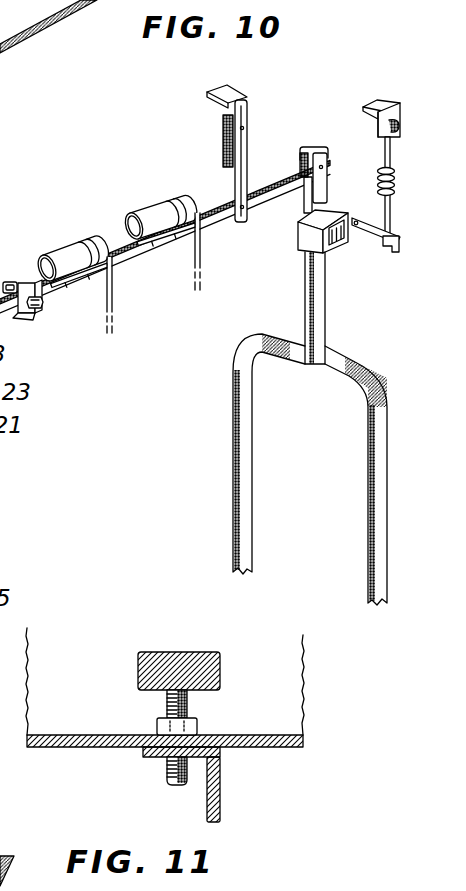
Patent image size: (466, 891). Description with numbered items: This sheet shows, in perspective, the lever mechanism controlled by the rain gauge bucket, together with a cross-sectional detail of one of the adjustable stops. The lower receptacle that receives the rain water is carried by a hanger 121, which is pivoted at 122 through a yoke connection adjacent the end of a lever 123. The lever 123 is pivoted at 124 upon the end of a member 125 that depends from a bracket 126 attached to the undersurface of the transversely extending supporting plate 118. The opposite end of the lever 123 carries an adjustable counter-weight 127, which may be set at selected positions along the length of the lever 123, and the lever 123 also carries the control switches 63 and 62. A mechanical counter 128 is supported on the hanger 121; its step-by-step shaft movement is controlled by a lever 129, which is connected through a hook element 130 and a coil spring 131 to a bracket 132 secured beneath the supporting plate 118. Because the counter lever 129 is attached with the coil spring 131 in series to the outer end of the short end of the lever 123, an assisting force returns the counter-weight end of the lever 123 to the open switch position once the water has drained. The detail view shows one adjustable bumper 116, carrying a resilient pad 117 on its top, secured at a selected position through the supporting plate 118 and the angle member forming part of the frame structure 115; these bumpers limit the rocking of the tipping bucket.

In FIG. 10, the control switch 62 is at (156, 213).
In FIG. 10, the control switch 63 is at (70, 252).
In FIG. 11, the frame structure 115 is at (221, 792).
In FIG. 11, the adjustable bumper 116 is at (189, 707).
In FIG. 11, the resilient pad 117 is at (163, 653).
In FIG. 11, the transversely extending supporting plate 118 is at (268, 748).
In FIG. 10, the hanger 121 is at (321, 306).
In FIG. 10, the pivot 122 is at (329, 148).
In FIG. 10, the lever 123 is at (273, 185).
In FIG. 10, the pivot 124 is at (241, 222).
In FIG. 10, the member 125 is at (232, 157).
In FIG. 10, the bracket 126 is at (234, 160).
In FIG. 10, the adjustable counter-weight 127 is at (36, 322).
In FIG. 10, the mechanical counter 128 is at (312, 236).
In FIG. 10, the lever 129 is at (388, 240).
In FIG. 10, the hook element 130 is at (387, 214).
In FIG. 10, the coil spring 131 is at (380, 178).
In FIG. 10, the bracket 132 is at (381, 103).